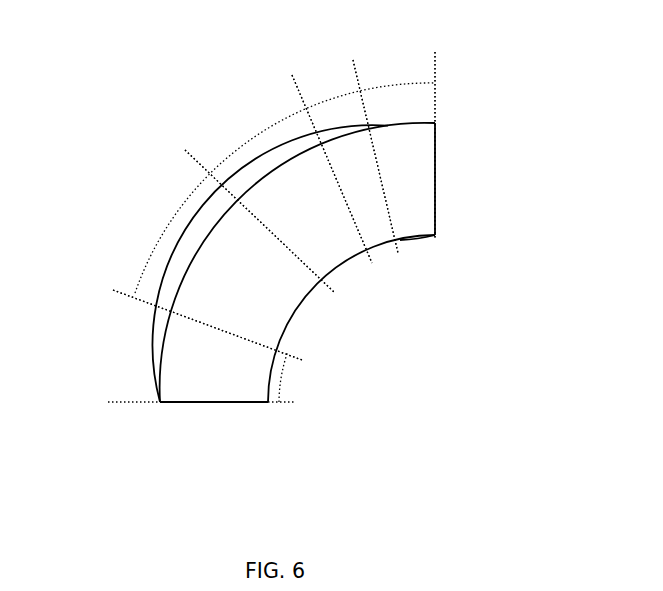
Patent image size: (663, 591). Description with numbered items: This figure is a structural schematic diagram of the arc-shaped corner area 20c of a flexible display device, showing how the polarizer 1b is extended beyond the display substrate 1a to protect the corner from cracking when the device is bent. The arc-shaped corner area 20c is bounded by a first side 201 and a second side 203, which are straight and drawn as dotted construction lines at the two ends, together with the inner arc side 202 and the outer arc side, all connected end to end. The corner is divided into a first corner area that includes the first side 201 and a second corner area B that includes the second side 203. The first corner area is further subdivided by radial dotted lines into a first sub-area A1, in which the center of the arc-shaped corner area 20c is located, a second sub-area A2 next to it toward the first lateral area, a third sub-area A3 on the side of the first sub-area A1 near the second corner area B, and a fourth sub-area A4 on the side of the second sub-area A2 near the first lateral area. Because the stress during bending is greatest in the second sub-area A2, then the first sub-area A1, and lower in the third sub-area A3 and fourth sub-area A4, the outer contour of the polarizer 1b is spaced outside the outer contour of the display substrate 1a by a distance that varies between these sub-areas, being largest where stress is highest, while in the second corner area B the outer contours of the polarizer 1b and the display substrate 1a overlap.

The arc-shaped corner area 20c is at (282, 253).
The display substrate 1a is at (255, 308).
The polarizer 1b is at (163, 326).
The first side 201 is at (213, 403).
The inner arc side 202 is at (420, 234).
The second side 203 is at (435, 185).
The first sub-area A1 is at (287, 169).
The second sub-area A2 is at (221, 221).
The third sub-area A3 is at (353, 156).
The fourth sub-area A4 is at (220, 345).
The second corner area B is at (412, 143).